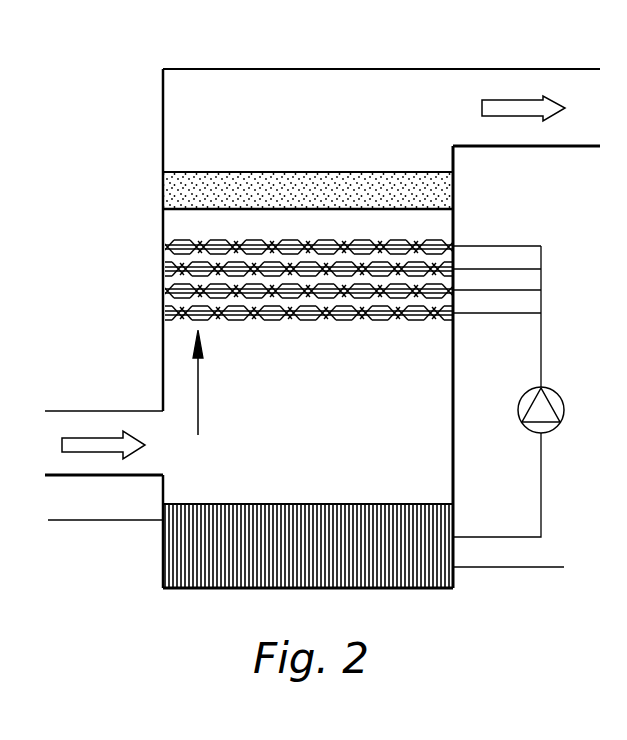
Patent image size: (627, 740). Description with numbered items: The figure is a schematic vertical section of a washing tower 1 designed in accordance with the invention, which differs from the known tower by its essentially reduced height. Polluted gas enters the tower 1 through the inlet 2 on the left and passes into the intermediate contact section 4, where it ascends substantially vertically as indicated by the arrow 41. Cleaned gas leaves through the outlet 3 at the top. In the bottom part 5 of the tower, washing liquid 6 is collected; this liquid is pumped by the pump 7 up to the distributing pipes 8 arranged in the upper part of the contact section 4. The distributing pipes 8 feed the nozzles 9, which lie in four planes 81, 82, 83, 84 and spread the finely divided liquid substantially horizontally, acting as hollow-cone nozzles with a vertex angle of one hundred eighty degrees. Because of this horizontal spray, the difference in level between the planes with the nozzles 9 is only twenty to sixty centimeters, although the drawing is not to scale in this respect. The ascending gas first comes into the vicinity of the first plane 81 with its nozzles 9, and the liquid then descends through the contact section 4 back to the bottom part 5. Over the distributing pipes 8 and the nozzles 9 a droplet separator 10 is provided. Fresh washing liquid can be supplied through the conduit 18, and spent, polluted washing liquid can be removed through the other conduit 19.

The tower 1 is at (294, 314).
The inlet 2 is at (102, 410).
The outlet 3 is at (496, 68).
The contact section 4 is at (287, 449).
The bottom part 5 is at (165, 590).
The washing liquid 6 is at (212, 573).
The pump 7 is at (565, 410).
The distributing pipes 8 is at (532, 363).
The nozzles 9 is at (308, 347).
The droplet separator 10 is at (416, 180).
The conduit 18 is at (91, 522).
The conduit 19 is at (511, 568).
The arrow 41 is at (200, 392).
The first plane with nozzles 81 is at (510, 314).
The plane with nozzles 82 is at (510, 291).
The plane with nozzles 83 is at (510, 270).
The plane with nozzles 84 is at (513, 247).